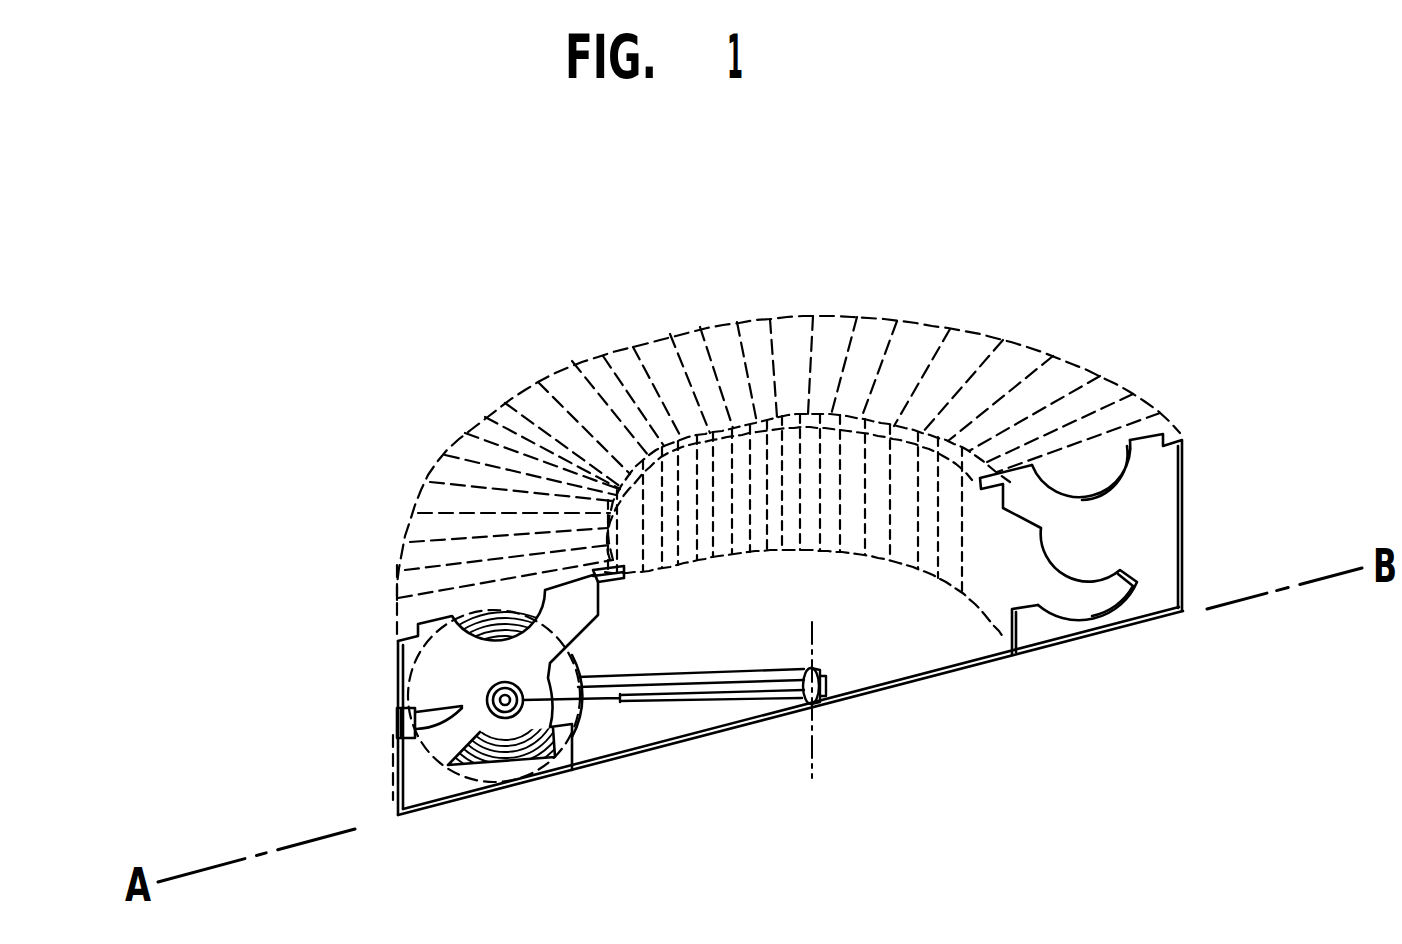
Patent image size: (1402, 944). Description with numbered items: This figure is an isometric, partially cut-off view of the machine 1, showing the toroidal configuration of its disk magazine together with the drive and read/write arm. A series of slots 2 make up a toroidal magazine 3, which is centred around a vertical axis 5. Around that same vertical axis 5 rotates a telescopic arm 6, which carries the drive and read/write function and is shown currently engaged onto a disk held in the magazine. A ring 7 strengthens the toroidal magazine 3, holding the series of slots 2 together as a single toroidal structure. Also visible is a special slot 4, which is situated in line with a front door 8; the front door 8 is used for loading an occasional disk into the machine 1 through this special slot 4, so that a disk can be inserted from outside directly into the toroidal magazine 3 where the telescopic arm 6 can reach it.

The machine 1 is at (812, 618).
The slots 2 is at (412, 592).
The toroidal magazine 3 is at (440, 496).
The special slot 4 is at (1071, 530).
The vertical axis 5 is at (814, 690).
The telescopic arm 6 is at (736, 690).
The ring 7 is at (614, 580).
The front door 8 is at (1186, 518).